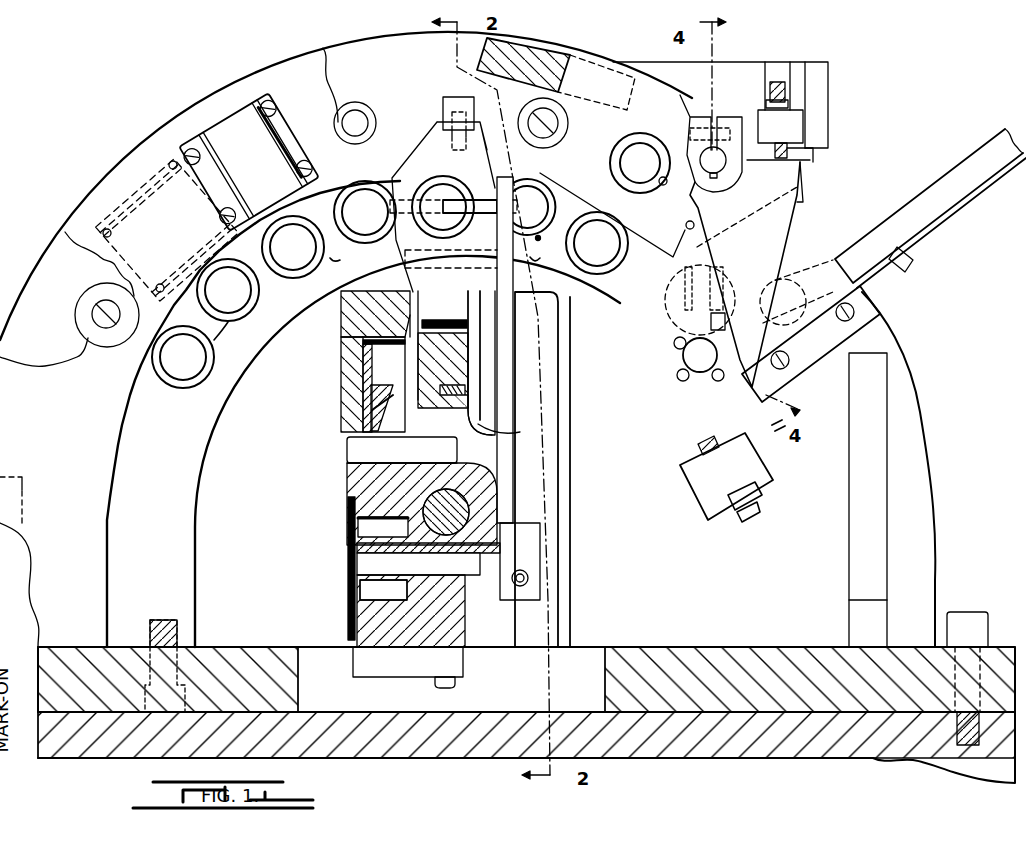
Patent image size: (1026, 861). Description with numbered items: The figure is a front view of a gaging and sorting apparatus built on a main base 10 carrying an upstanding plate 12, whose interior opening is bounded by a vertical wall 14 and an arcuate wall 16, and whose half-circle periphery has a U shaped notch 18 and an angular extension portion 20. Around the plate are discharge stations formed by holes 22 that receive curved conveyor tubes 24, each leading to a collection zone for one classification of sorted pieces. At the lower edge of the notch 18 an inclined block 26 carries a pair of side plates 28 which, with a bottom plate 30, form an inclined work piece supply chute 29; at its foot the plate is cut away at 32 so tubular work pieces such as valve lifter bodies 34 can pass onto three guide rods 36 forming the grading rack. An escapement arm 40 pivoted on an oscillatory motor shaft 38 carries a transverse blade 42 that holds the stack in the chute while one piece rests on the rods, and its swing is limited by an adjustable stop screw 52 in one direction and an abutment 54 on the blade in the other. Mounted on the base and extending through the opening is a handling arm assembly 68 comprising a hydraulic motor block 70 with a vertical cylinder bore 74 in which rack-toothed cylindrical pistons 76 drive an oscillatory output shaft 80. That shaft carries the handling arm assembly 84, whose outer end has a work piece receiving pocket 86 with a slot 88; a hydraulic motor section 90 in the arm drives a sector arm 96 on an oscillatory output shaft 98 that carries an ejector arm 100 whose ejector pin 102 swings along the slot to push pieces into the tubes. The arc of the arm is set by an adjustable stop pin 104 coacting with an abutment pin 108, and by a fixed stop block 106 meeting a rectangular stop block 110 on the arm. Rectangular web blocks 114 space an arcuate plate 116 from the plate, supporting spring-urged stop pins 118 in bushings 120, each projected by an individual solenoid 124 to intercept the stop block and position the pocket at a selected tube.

The main base 10 is at (526, 715).
The upstanding plate 12 is at (672, 565).
The vertical wall 14 is at (566, 348).
The arcuate wall 16 is at (262, 350).
The U shaped notch 18 is at (690, 268).
The angular extension portion 20 is at (752, 62).
The holes 22 is at (388, 293).
The conveyor tubes 24 is at (560, 212).
The inclined block 26 is at (832, 288).
The side plates 28 is at (815, 362).
The work piece supply chute 29 is at (930, 242).
The plate 30 is at (950, 208).
The cut-away 32 is at (680, 368).
The valve lifter bodies 34 is at (700, 378).
The guide rods 36 is at (703, 340).
The oscillatory motor shaft 38 is at (722, 155).
The escapement arm 40 is at (790, 220).
The transverse blade 42 is at (735, 262).
The adjustable stop screw 52 is at (790, 155).
The abutment 54 is at (675, 302).
The handling arm assembly 68 is at (333, 479).
The hydraulic motor block 70 is at (565, 450).
The vertical cylinder bore 74 is at (374, 360).
The cylindrical pistons 76 is at (372, 410).
The oscillatory output shaft 80 is at (446, 512).
The handling arm assembly 84 is at (520, 432).
The work piece receiving pocket 86 is at (444, 192).
The slot 88 is at (483, 196).
The hydraulic motor section 90 is at (362, 590).
The sector arm 96 is at (345, 528).
The oscillatory output shaft 98 is at (480, 600).
The ejector arm 100 is at (510, 318).
The ejector pin 102 is at (478, 260).
The adjustable stop pin 104 is at (684, 452).
The fixed stop block 106 is at (98, 325).
The abutment pin 108 is at (555, 300).
The rectangular stop block 110 is at (443, 114).
The rectangular web blocks 114 is at (540, 55).
The arcuate plate 116 is at (98, 398).
The stop pins 118 is at (352, 118).
The bushings 120 is at (620, 160).
The solenoid 124 is at (126, 196).